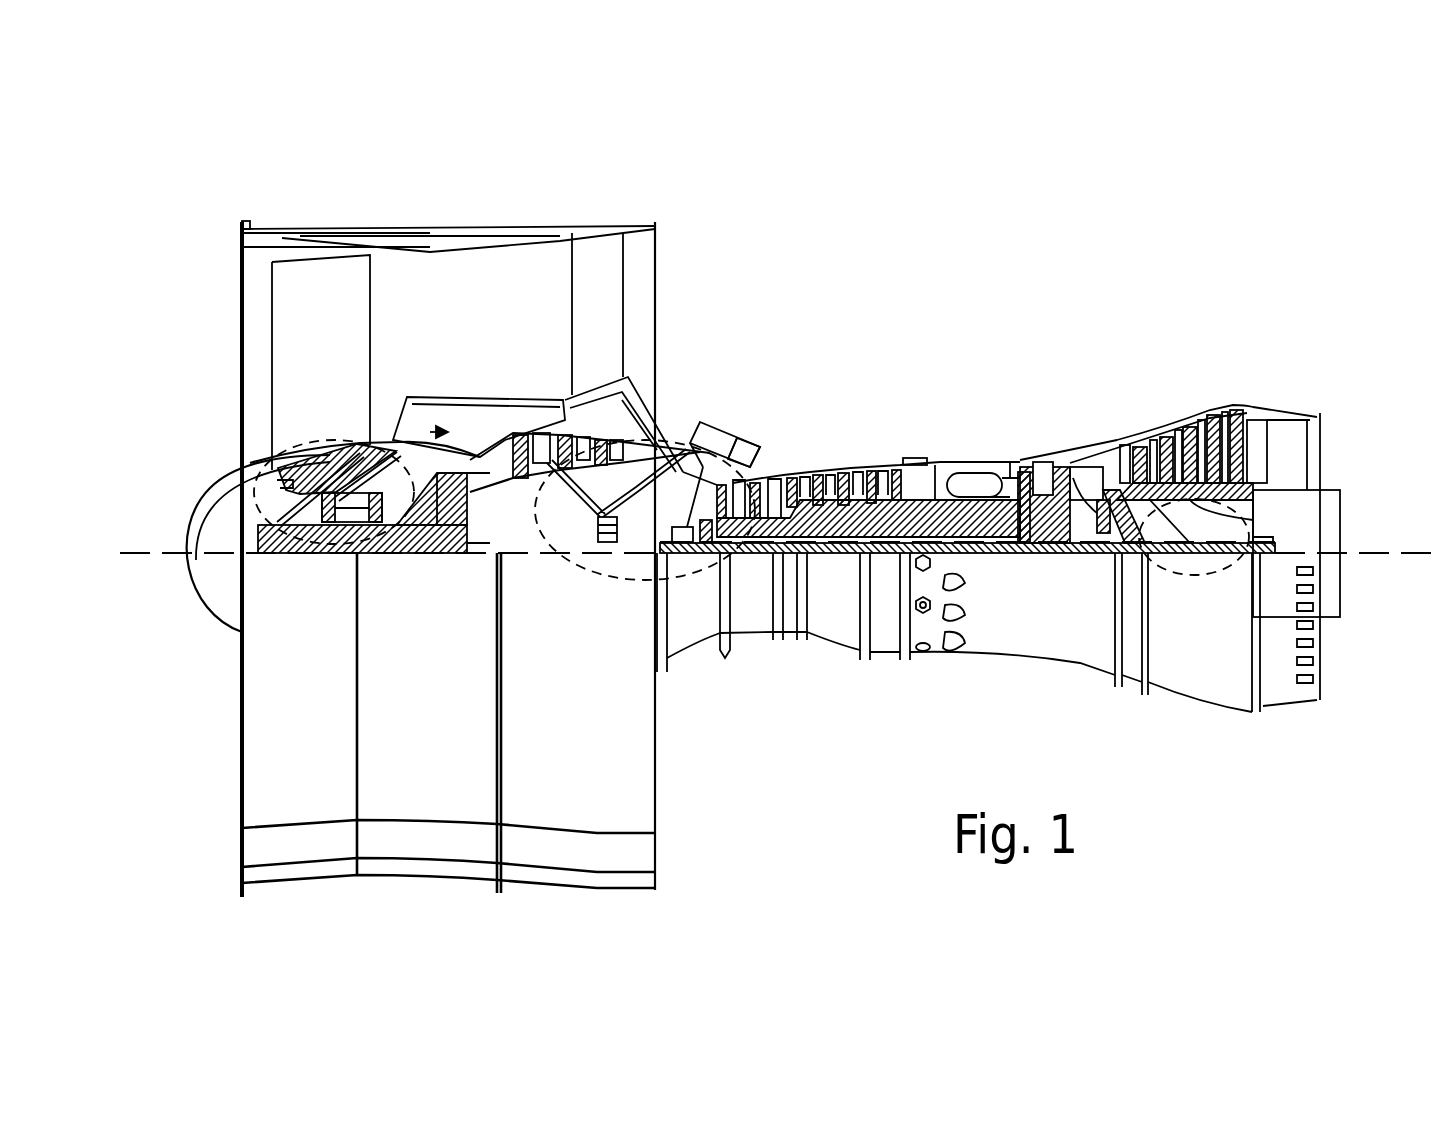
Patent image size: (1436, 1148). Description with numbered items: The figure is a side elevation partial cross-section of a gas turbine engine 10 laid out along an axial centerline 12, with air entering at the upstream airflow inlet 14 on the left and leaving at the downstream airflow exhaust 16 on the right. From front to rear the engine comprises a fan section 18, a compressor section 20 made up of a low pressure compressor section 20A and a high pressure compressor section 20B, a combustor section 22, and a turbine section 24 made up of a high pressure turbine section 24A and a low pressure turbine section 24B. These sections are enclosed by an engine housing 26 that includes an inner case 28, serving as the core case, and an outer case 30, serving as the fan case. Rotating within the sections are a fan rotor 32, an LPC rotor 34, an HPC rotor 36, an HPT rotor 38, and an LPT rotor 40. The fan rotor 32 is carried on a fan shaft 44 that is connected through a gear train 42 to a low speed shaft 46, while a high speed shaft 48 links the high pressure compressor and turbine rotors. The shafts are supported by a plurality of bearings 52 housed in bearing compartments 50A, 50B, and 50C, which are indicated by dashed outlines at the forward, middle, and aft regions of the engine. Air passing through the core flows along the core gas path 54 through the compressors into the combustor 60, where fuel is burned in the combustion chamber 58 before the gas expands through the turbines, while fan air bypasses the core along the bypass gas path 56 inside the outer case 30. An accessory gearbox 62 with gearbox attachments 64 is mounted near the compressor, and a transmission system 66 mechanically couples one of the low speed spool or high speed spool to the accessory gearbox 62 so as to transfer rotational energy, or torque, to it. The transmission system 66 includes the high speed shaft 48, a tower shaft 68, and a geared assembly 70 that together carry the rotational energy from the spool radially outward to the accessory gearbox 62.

The gas turbine engine 10 is at (1262, 180).
The axial centerline 12 is at (1383, 553).
The upstream airflow inlet 14 is at (242, 332).
The downstream airflow exhaust 16 is at (1325, 455).
The fan section 18 is at (427, 195).
The compressor section 20 is at (870, 133).
The low pressure compressor section 20A is at (658, 372).
The high pressure compressor section 20B is at (872, 340).
The combustor section 22 is at (1012, 340).
The turbine section 24 is at (1273, 248).
The high pressure turbine section 24A is at (1114, 340).
The low pressure turbine section 24B is at (1272, 340).
The engine housing 26 is at (685, 680).
The inner case 28 is at (887, 655).
The outer case 30 is at (577, 890).
The fan rotor 32 is at (300, 474).
The LPC rotor 34 is at (535, 555).
The HPC rotor 36 is at (835, 555).
The HPT rotor 38 is at (1065, 555).
The LPT rotor 40 is at (1253, 520).
The gear train 42 is at (460, 560).
The fan shaft 44 is at (320, 560).
The low speed shaft 46 is at (1203, 567).
The high speed shaft 48 is at (975, 555).
The bearing compartment 50A is at (300, 445).
The bearing compartment 50B is at (640, 452).
The bearing compartment 50C is at (1215, 562).
The bearings 52 is at (338, 565).
The core gas path 54 is at (430, 430).
The bypass gas path 56 is at (365, 362).
The combustion chamber 58 is at (975, 482).
The combustor 60 is at (1005, 470).
The accessory gearbox 62 is at (713, 425).
The gearbox attachments 64 is at (755, 445).
The transmission system 66 is at (677, 465).
The tower shaft 68 is at (762, 464).
The geared assembly 70 is at (690, 530).